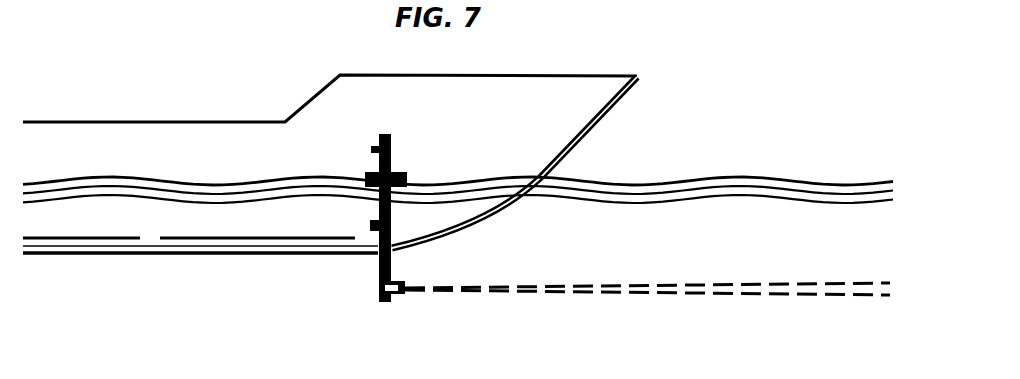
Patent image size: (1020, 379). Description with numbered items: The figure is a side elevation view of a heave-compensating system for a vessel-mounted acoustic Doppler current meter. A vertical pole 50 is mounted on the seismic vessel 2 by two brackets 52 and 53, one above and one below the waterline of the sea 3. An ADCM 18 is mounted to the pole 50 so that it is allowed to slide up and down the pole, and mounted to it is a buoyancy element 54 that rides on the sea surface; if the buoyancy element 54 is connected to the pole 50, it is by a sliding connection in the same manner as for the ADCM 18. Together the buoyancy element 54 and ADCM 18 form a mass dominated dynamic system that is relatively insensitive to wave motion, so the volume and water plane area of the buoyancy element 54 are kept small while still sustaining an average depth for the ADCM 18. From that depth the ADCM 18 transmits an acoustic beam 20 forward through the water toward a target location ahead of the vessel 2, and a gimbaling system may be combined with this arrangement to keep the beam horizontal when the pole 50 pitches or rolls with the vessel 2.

The seismic vessel 2 is at (113, 122).
The sea 3 is at (760, 179).
The ADCM 18 is at (391, 294).
The acoustic beam 20 is at (758, 296).
The vertical pole 50 is at (378, 270).
The bracket 52 is at (371, 150).
The bracket 53 is at (370, 228).
The buoyancy element 54 is at (400, 175).